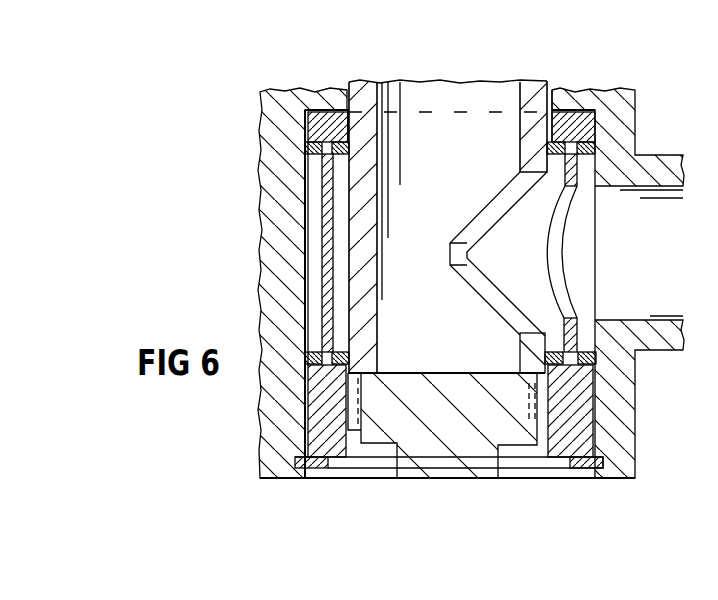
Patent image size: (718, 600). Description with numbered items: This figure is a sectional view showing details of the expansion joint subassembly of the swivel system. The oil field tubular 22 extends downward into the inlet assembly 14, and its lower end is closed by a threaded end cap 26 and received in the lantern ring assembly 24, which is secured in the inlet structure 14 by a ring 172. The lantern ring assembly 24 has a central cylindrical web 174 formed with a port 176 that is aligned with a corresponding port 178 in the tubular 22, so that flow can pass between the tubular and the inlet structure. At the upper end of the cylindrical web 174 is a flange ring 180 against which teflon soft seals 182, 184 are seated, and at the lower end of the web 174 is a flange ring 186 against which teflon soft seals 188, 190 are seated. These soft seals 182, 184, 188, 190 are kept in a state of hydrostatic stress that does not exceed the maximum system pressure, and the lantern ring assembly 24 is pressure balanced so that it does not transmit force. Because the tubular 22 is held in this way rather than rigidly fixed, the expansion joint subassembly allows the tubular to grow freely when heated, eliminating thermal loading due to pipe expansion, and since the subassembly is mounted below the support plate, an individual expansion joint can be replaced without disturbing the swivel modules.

The inlet assembly 14 is at (258, 205).
The oil field tubular 22 is at (363, 81).
The lantern ring assembly 24 is at (314, 272).
The end cap 26 is at (424, 444).
The ring 172 is at (562, 468).
The central cylindrical web 174 is at (322, 244).
The port 176 is at (562, 240).
The port 178 is at (485, 230).
The flange ring 180 is at (318, 130).
The teflon soft seal 182 is at (305, 147).
The teflon soft seal 184 is at (353, 148).
The flange ring 186 is at (323, 402).
The teflon soft seal 188 is at (306, 352).
The teflon soft seal 190 is at (349, 352).